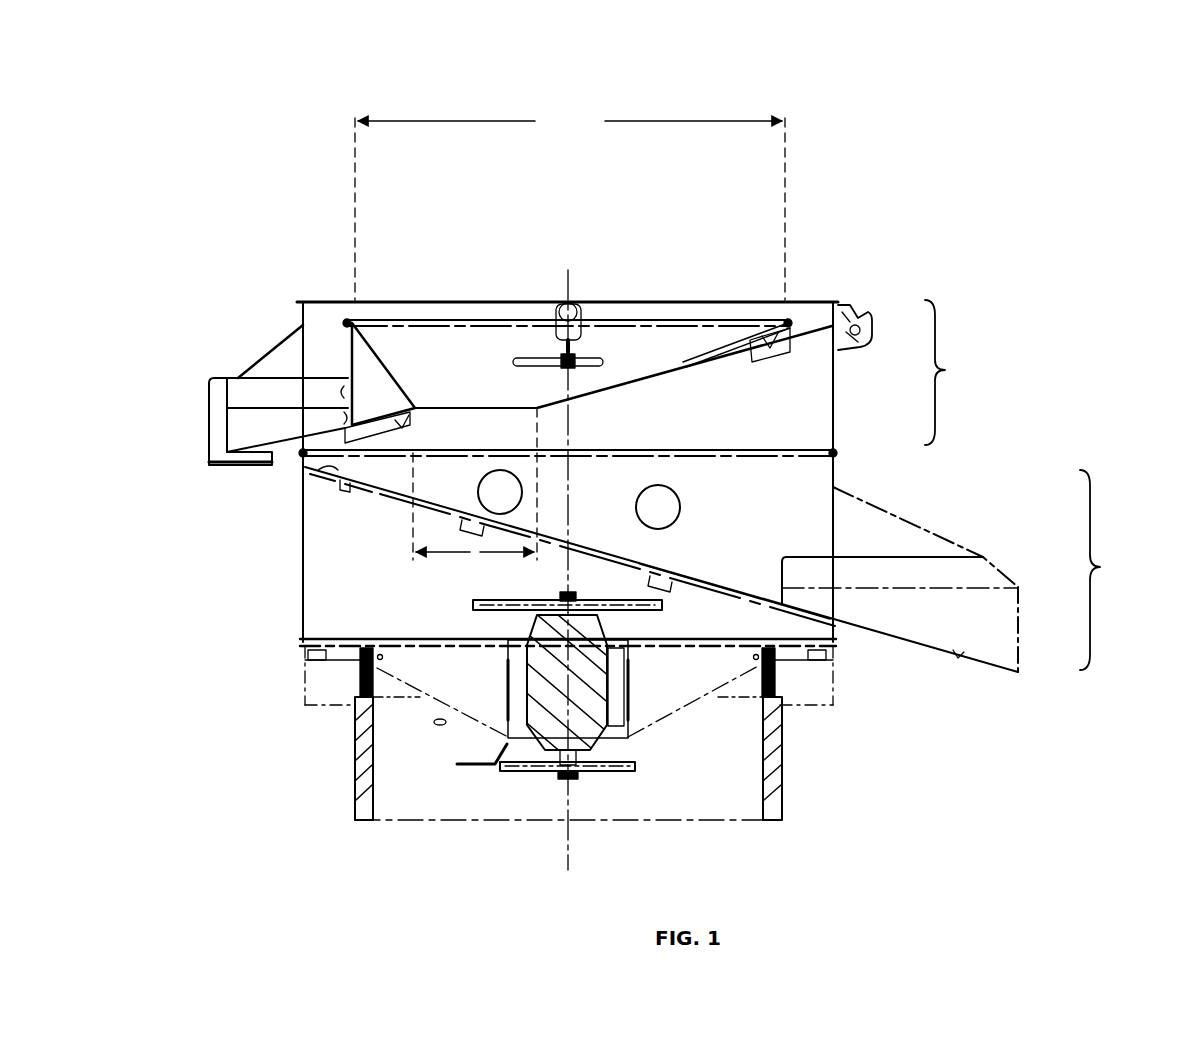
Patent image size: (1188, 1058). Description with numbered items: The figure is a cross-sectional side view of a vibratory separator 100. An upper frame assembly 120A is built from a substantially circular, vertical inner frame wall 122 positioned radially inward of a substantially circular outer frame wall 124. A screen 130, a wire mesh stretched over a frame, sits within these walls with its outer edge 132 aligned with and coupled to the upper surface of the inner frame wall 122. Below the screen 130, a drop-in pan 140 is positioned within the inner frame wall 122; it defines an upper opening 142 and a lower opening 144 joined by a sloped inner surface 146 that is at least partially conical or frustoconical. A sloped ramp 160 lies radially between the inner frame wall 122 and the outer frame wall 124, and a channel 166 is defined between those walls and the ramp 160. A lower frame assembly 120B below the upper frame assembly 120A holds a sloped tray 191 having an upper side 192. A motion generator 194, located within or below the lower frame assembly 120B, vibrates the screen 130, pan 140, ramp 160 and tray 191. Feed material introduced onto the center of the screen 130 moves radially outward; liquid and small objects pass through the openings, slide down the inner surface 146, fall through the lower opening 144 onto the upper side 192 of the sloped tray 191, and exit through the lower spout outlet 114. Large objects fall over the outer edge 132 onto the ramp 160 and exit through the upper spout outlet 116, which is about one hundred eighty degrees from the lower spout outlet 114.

The vibratory separator 100 is at (237, 66).
The lower spout outlet 114 is at (1020, 631).
The upper spout outlet 116 is at (208, 394).
The upper frame assembly 120A is at (972, 372).
The lower frame assembly 120B is at (1128, 570).
The inner frame wall 122 is at (345, 356).
The outer frame wall 124 is at (835, 396).
The screen 130 is at (628, 300).
The outer edge 132 is at (346, 318).
The drop-in pan 140 is at (393, 374).
The upper opening 142 is at (570, 205).
The lower opening 144 is at (475, 496).
The inner surface 146 is at (414, 406).
The ramp 160 is at (818, 325).
The channel 166 is at (813, 278).
The sloped tray 191 is at (680, 573).
The upper side 192 is at (305, 478).
The motion generator 194 is at (567, 706).